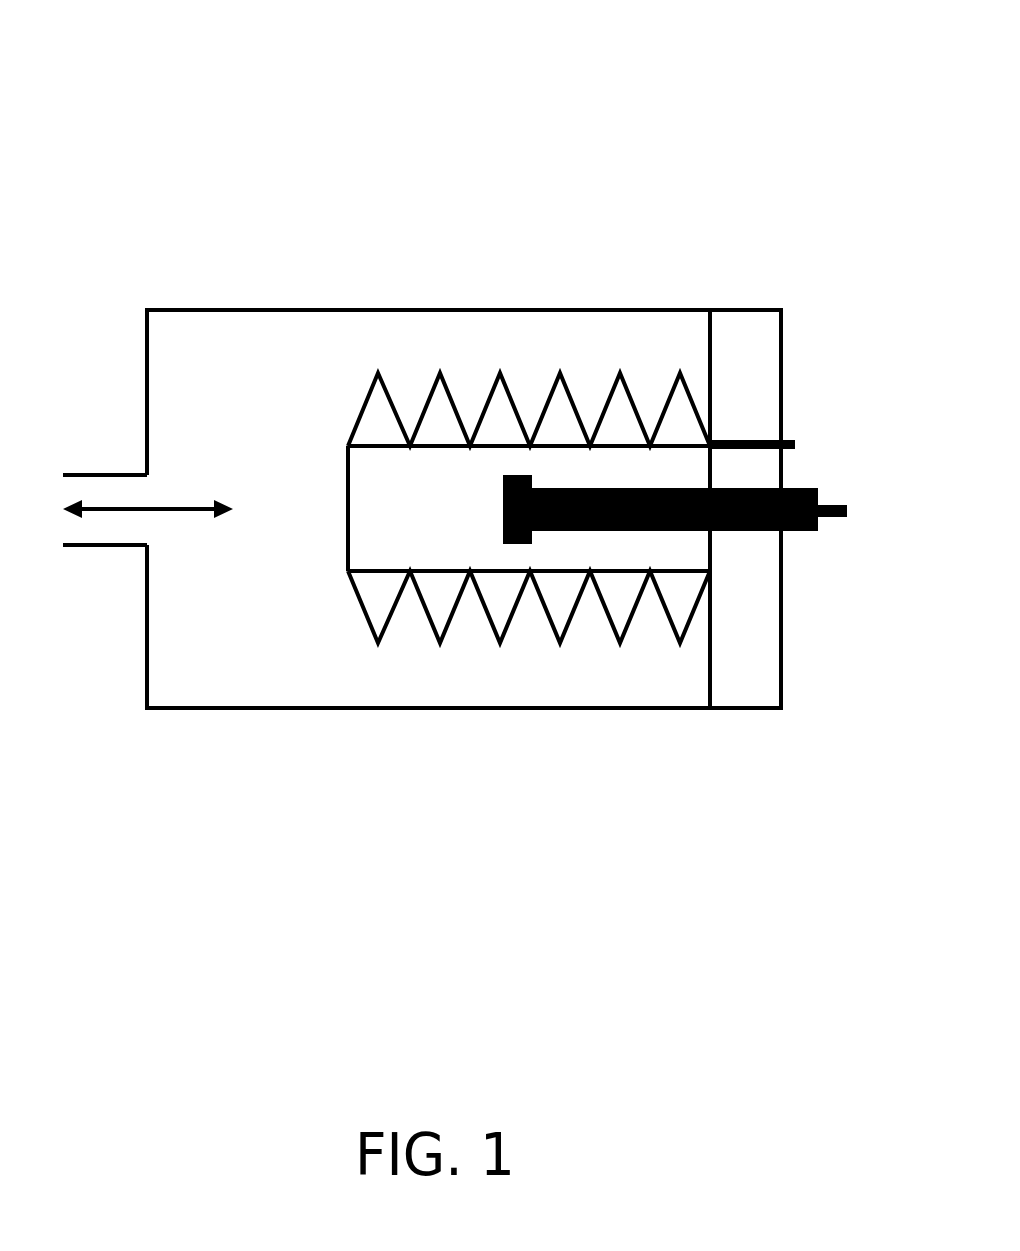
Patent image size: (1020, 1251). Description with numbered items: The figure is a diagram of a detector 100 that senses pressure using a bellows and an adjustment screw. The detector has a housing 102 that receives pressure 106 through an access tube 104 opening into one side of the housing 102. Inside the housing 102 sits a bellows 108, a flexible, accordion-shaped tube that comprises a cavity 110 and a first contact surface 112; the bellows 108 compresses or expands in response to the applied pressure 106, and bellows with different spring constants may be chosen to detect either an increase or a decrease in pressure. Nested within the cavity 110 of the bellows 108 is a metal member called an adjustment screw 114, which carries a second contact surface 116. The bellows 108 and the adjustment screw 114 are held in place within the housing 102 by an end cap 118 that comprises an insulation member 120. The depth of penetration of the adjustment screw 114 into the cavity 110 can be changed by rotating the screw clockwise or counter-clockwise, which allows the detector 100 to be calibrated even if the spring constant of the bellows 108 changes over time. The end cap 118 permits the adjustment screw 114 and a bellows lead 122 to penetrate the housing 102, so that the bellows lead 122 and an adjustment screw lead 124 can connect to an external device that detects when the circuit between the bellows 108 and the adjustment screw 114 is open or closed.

The detector 100 is at (601, 73).
The housing 102 is at (452, 462).
The access tube 104 is at (90, 463).
The pressure 106 is at (148, 595).
The bellows 108 is at (474, 497).
The cavity 110 is at (324, 564).
The contact surface 112 is at (475, 532).
The adjustment screw 114 is at (660, 589).
The contact surface 116 is at (474, 511).
The end cap 118 is at (756, 554).
The insulation member 120 is at (775, 509).
The bellows lead 122 is at (783, 395).
The adjustment screw lead 124 is at (827, 476).